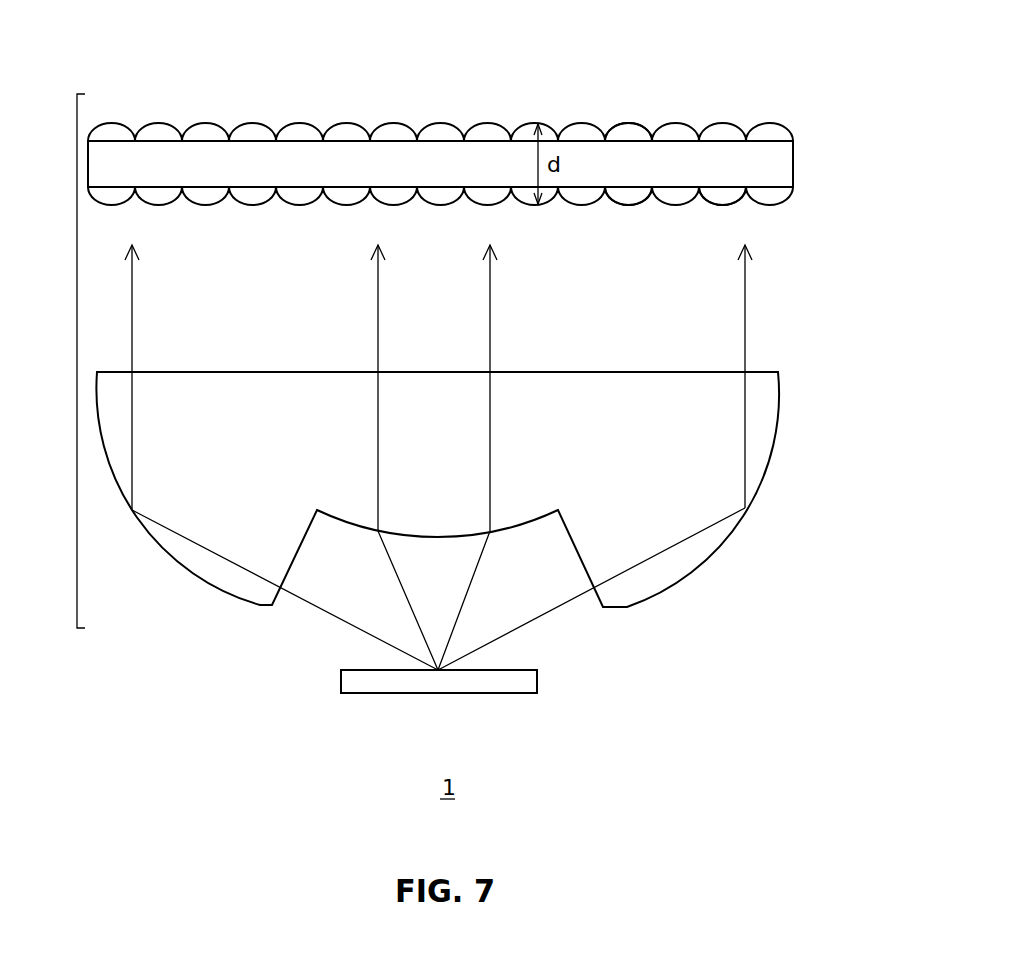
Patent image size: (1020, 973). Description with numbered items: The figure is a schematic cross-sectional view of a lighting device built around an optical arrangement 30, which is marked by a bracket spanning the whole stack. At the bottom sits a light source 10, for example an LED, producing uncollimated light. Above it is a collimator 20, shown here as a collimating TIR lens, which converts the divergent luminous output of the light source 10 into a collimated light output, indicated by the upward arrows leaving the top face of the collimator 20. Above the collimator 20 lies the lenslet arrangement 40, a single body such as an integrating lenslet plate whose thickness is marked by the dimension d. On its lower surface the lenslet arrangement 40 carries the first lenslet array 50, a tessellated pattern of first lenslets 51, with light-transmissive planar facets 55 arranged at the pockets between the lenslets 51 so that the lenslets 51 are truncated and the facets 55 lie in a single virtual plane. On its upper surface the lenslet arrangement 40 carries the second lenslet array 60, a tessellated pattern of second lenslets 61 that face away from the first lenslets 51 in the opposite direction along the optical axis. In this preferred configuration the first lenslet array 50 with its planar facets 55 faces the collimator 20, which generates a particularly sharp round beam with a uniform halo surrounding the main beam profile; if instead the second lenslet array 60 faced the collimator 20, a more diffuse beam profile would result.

The light source 10 is at (523, 682).
The collimator 20 is at (447, 370).
The optical arrangement 30 is at (77, 362).
The lenslet arrangement 40 is at (421, 145).
The first lenslet array 50 is at (793, 190).
The first lenslet 51 is at (637, 195).
The light-transmissive planar facet 55 is at (705, 191).
The second lenslet array 60 is at (793, 134).
The second lenslet 61 is at (634, 142).